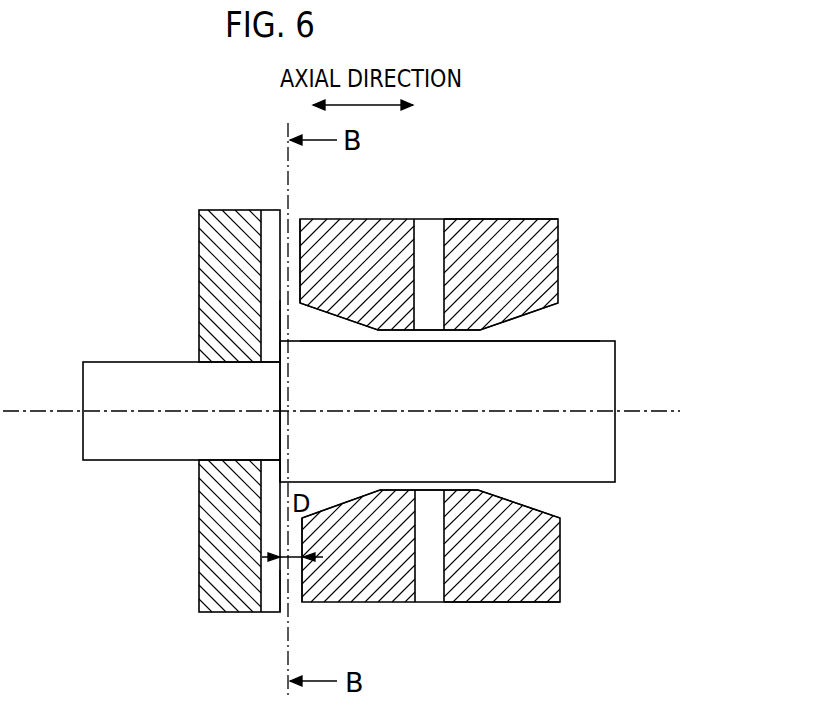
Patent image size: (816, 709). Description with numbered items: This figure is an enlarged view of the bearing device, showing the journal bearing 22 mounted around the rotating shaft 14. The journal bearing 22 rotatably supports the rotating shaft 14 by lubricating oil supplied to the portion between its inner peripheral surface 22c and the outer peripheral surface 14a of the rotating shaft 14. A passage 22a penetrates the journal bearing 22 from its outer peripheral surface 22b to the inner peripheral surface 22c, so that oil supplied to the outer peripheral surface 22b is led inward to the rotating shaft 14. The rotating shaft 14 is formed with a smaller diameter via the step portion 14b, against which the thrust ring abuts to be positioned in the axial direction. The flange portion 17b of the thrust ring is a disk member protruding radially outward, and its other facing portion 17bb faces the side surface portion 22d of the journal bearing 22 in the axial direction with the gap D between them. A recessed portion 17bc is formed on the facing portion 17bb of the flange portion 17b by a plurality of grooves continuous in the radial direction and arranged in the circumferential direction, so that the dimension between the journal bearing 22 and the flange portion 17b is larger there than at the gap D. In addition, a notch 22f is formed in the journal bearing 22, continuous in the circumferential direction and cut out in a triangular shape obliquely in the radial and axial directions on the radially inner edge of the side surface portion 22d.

The rotating shaft 14 is at (615, 362).
The outer peripheral surface of the rotating shaft 14a is at (600, 341).
The step portion 14b is at (280, 436).
The flange portion 17b is at (222, 209).
The other facing portion 17bb is at (285, 316).
The recessed portion 17bc is at (262, 582).
The journal bearing 22 is at (519, 218).
The passage 22a is at (431, 218).
The outer peripheral surface of the journal bearing 22b is at (381, 218).
The inner peripheral surface of the journal bearing 22c is at (457, 330).
The side surface portion 22d is at (298, 252).
The notch 22f is at (540, 311).